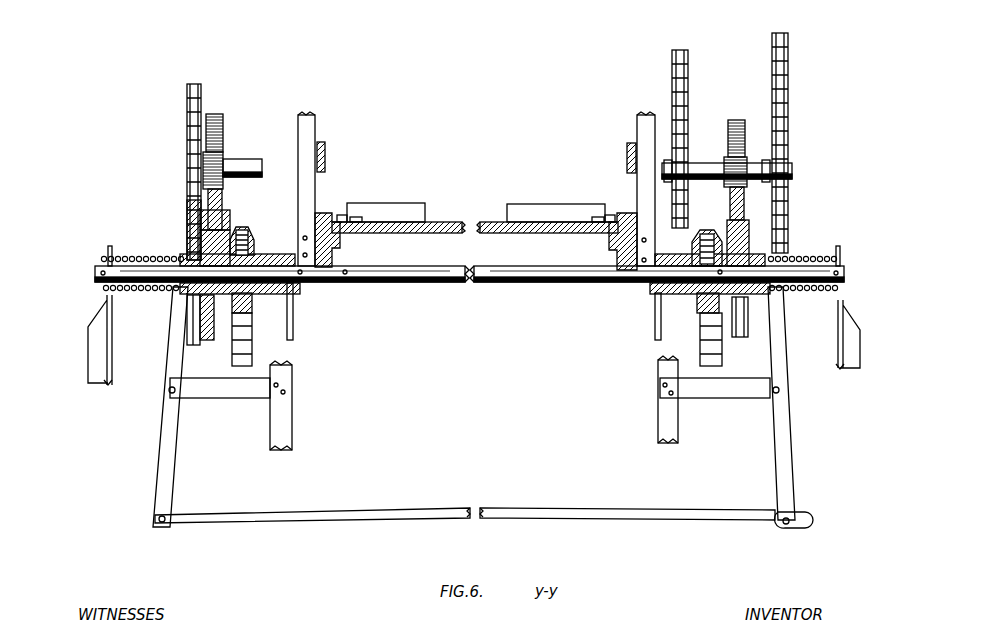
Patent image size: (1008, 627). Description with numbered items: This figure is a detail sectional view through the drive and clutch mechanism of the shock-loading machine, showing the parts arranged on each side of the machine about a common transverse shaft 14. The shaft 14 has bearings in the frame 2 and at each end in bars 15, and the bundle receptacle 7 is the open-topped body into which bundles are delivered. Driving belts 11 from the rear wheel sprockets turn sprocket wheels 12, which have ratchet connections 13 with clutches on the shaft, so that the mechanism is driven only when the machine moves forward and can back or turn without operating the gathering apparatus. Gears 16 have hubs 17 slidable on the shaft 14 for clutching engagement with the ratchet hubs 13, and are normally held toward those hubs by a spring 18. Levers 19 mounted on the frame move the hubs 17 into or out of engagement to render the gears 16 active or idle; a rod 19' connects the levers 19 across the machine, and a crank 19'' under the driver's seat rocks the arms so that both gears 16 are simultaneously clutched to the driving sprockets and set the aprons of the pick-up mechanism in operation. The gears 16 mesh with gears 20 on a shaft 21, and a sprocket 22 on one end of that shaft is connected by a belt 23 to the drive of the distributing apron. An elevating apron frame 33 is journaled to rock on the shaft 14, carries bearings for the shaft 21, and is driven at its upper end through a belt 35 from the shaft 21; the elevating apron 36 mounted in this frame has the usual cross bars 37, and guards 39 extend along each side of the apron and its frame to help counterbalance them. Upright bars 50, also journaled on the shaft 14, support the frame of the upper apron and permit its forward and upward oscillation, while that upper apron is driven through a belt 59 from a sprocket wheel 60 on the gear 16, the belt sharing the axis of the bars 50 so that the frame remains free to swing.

The frame 2 is at (292, 425).
The bundle receptacle 7 is at (295, 335).
The driving belt 11 is at (252, 338).
The sprocket wheel 12 is at (254, 240).
The ratchet connection 13 is at (250, 305).
The shaft 14 is at (210, 255).
The bar 15 is at (105, 386).
The gear 16 is at (222, 250).
The hub 17 is at (190, 258).
The spring 18 is at (155, 291).
The lever 19 is at (469, 407).
The rod 19' is at (312, 532).
The crank 19'' is at (646, 533).
The gear 20 is at (218, 116).
The shaft 21 is at (243, 165).
The sprocket 22 is at (788, 211).
The belt 23 is at (788, 96).
The elevating apron frame 33 is at (340, 255).
The belt 35 is at (688, 62).
The elevating apron 36 is at (445, 222).
The cross bar 37 is at (405, 205).
The guard 39 is at (325, 150).
The upright bar 50 is at (310, 116).
The belt 59 is at (187, 108).
The sprocket wheel 60 is at (193, 338).